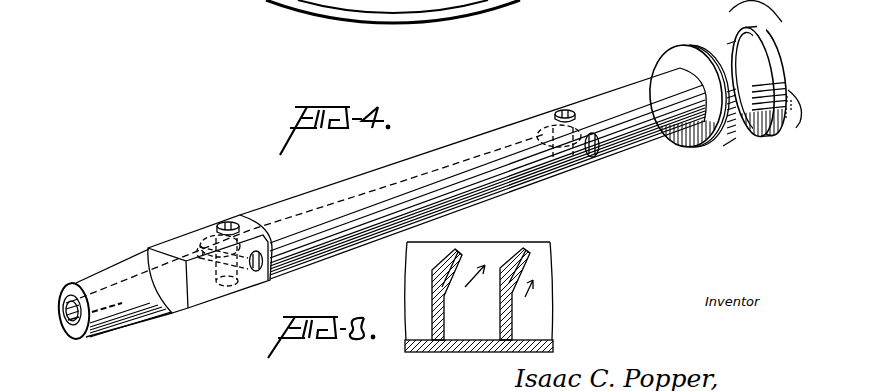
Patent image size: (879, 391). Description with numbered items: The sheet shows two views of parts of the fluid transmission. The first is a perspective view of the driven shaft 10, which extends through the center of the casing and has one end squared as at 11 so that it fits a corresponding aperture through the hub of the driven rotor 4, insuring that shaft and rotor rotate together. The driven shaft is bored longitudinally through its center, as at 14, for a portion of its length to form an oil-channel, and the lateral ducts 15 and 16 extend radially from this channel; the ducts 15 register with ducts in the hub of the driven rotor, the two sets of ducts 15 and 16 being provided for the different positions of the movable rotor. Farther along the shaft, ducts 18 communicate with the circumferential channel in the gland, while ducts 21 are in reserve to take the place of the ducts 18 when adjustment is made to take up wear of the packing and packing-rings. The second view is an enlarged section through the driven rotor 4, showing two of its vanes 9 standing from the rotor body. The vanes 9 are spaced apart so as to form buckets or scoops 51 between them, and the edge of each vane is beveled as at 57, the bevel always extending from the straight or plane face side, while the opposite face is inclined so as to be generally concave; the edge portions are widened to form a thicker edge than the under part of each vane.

In FIG. 4, the driven shaft 10 is at (446, 148).
In FIG. 4, the squared end 11 is at (178, 238).
In FIG. 4, the longitudinal bore 14 is at (61, 298).
In FIG. 4, the lateral ducts 15 is at (222, 224).
In FIG. 4, the lateral ducts 16 is at (256, 271).
In FIG. 4, the ducts 18 is at (563, 109).
In FIG. 4, the reserve ducts 21 is at (595, 157).
In FIG. 8, the driven rotor 4 is at (541, 249).
In FIG. 8, the vanes 9 is at (435, 323).
In FIG. 8, the buckets or scoops 51 is at (481, 294).
In FIG. 8, the bevel 57 is at (521, 252).